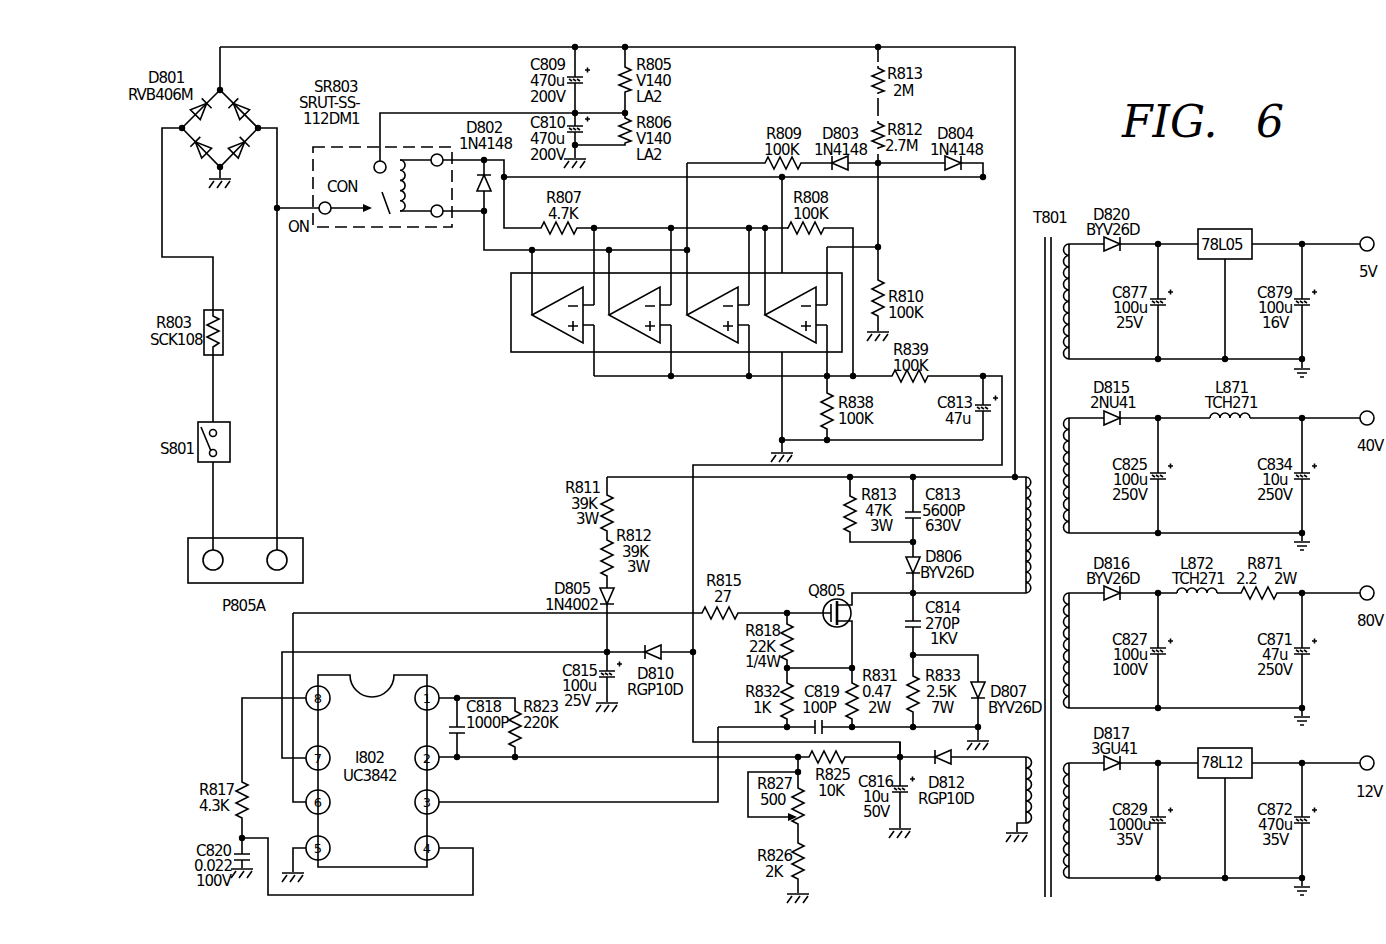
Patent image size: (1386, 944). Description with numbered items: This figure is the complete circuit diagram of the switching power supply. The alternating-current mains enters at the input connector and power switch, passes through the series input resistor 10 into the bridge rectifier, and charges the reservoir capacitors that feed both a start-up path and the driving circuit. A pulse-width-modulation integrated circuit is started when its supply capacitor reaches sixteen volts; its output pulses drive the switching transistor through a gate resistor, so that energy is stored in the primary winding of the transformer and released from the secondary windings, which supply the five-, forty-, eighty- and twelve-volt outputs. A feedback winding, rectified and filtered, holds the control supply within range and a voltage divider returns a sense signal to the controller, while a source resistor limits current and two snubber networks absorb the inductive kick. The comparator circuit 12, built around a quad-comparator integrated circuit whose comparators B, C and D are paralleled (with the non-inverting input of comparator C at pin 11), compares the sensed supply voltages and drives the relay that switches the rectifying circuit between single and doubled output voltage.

The thermistor R803 10 is at (194, 338).
The comparator IC I801 LM339 11 is at (598, 373).
The comparator circuit 12 is at (500, 340).